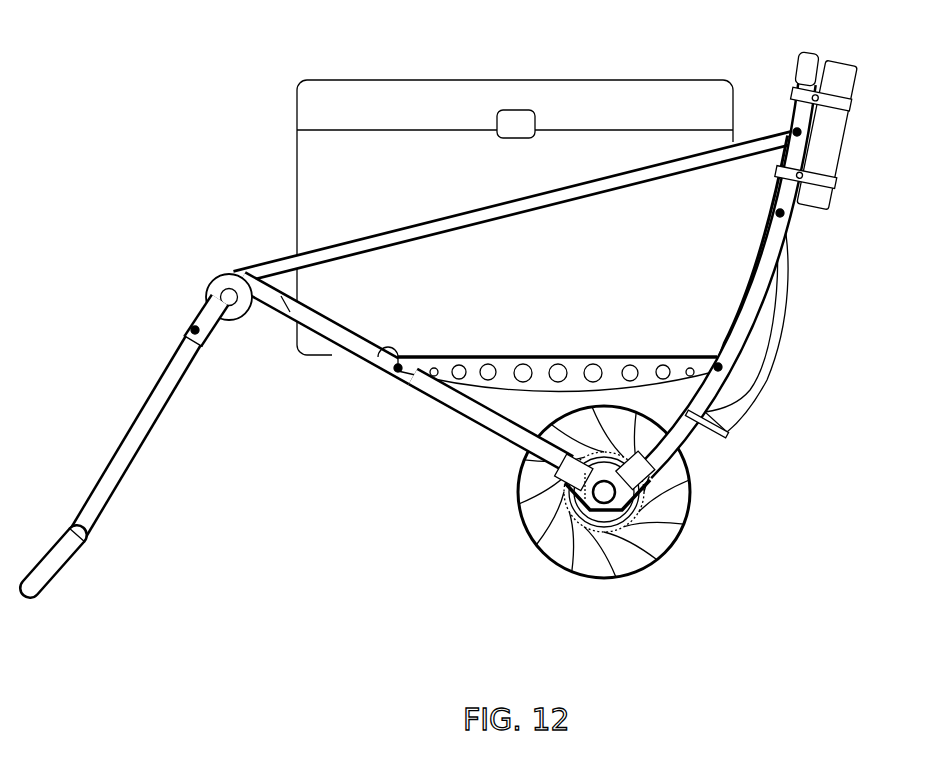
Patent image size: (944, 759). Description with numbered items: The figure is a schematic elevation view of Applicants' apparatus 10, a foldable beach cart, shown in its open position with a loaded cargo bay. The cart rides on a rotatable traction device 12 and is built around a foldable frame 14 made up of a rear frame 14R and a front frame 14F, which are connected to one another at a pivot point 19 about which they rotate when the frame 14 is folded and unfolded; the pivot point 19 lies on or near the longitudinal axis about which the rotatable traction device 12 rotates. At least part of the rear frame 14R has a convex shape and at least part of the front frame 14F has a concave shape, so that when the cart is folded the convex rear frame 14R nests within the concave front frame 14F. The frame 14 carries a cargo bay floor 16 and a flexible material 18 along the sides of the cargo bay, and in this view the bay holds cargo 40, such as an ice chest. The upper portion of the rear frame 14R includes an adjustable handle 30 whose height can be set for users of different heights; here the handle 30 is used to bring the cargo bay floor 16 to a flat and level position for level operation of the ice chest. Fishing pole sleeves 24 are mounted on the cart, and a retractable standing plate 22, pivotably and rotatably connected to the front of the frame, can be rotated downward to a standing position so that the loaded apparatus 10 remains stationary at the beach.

The apparatus 10 is at (472, 381).
The rotatable traction device 12 is at (682, 538).
The foldable frame 14 is at (474, 420).
The rear frame 14R is at (333, 345).
The front frame 14F is at (790, 120).
The cargo bay floor 16 is at (540, 356).
The flexible material 18 is at (430, 228).
The pivot point 19 is at (603, 490).
The retractable standing plate 22 is at (781, 348).
The fishing pole sleeves 24 is at (848, 140).
The adjustable handle 30 is at (42, 587).
The cargo 40 is at (441, 78).